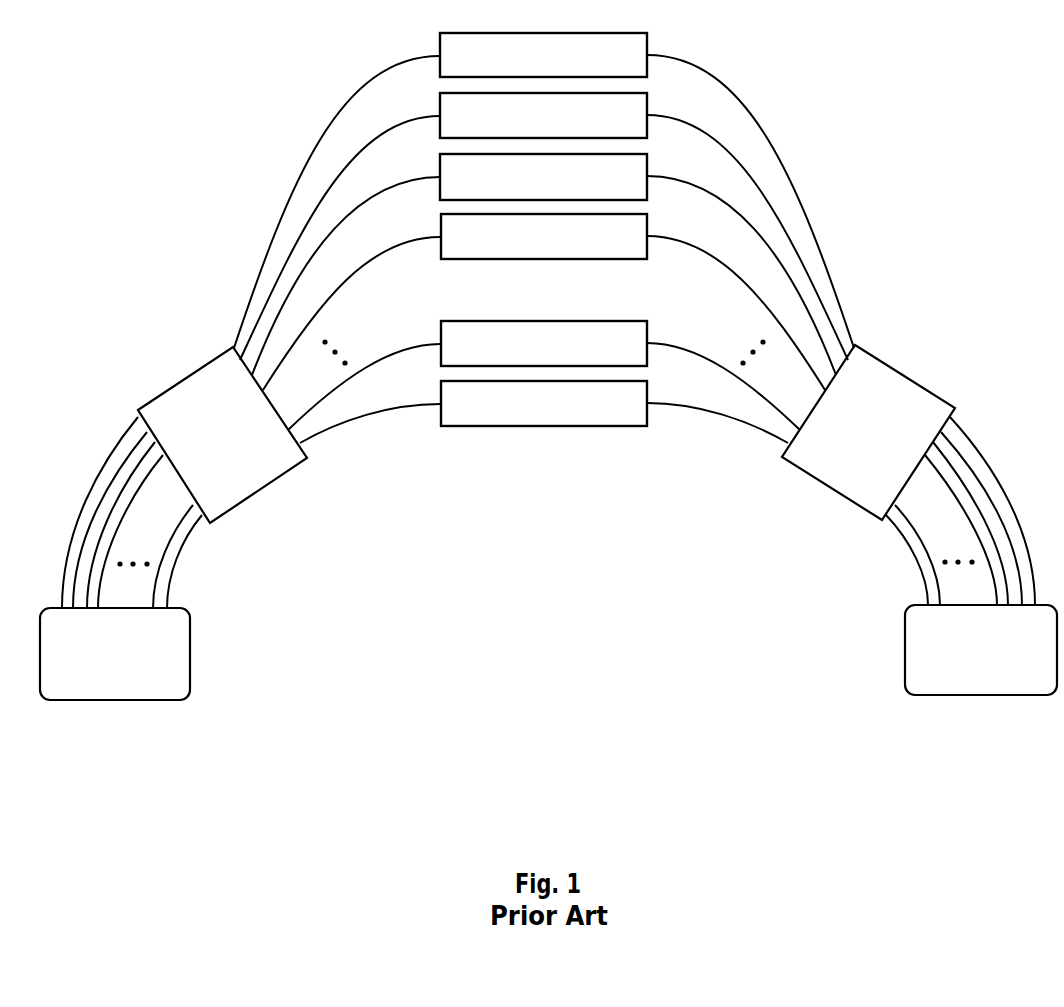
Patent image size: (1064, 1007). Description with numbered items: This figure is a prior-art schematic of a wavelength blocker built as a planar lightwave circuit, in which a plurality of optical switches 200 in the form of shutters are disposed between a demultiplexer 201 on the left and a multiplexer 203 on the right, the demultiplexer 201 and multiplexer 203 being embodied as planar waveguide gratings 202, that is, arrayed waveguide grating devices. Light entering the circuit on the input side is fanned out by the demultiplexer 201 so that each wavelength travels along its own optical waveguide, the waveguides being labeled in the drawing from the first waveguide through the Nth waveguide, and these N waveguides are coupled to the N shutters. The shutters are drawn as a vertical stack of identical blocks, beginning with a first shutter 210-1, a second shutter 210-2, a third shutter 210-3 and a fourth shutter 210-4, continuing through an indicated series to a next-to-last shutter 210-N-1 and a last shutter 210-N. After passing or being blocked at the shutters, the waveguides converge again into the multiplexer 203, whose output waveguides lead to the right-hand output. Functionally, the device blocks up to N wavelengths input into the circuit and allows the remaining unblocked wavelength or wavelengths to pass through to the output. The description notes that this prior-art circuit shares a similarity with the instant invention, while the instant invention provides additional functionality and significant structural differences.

The optical switches 200 is at (931, 124).
The demultiplexer 201 is at (373, 755).
The planar waveguide gratings 202 is at (720, 757).
The multiplexer 203 is at (1043, 755).
The shutter 210-1 is at (648, 44).
The shutter 210-2 is at (648, 103).
The shutter 210-3 is at (648, 165).
The shutter 210-4 is at (588, 260).
The shutter 210-N-1 is at (560, 318).
The shutter 210-N is at (542, 427).